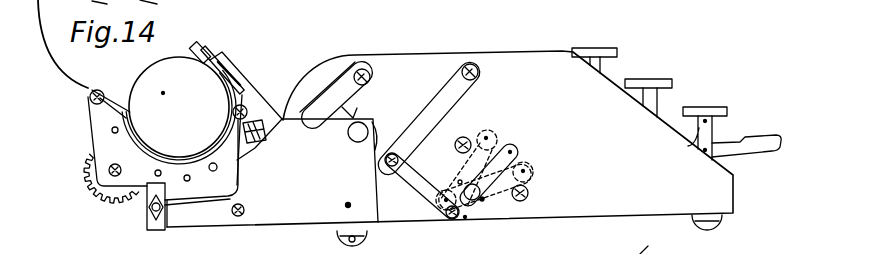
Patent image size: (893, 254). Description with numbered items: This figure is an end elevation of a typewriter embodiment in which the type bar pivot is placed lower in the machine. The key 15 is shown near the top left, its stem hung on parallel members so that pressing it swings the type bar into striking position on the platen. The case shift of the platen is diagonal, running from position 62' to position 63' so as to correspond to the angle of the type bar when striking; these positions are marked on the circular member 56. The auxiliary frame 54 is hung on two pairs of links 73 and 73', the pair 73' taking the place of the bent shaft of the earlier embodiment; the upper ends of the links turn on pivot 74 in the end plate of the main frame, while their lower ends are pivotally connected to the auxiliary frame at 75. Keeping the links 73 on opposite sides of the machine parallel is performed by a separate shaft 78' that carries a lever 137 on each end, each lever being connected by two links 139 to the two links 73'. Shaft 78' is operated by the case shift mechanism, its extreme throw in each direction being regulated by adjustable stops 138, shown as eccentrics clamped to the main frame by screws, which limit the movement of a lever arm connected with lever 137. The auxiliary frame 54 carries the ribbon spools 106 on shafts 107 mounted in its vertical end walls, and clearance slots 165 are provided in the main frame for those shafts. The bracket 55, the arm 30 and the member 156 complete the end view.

The key 15 is at (210, 49).
The arm 30 is at (746, 136).
The auxiliary frame 54 is at (333, 150).
The bracket 55 is at (183, 141).
The disc 56 is at (179, 107).
The platen case shift position 62' is at (217, 121).
The platen case shift position 63' is at (149, 97).
The links 73 is at (350, 95).
The links 73' is at (440, 118).
The pivot 74 is at (365, 77).
The pivotal connection 75 is at (234, 216).
The shaft 78' is at (504, 209).
The ribbon spools 106 is at (320, 87).
The ribbon spool shafts 107 is at (358, 132).
The lever 137 is at (476, 198).
The adjustable stops 138 is at (471, 140).
The links 139 is at (427, 188).
The member 156 is at (660, 247).
The clearance slots 165 is at (378, 156).